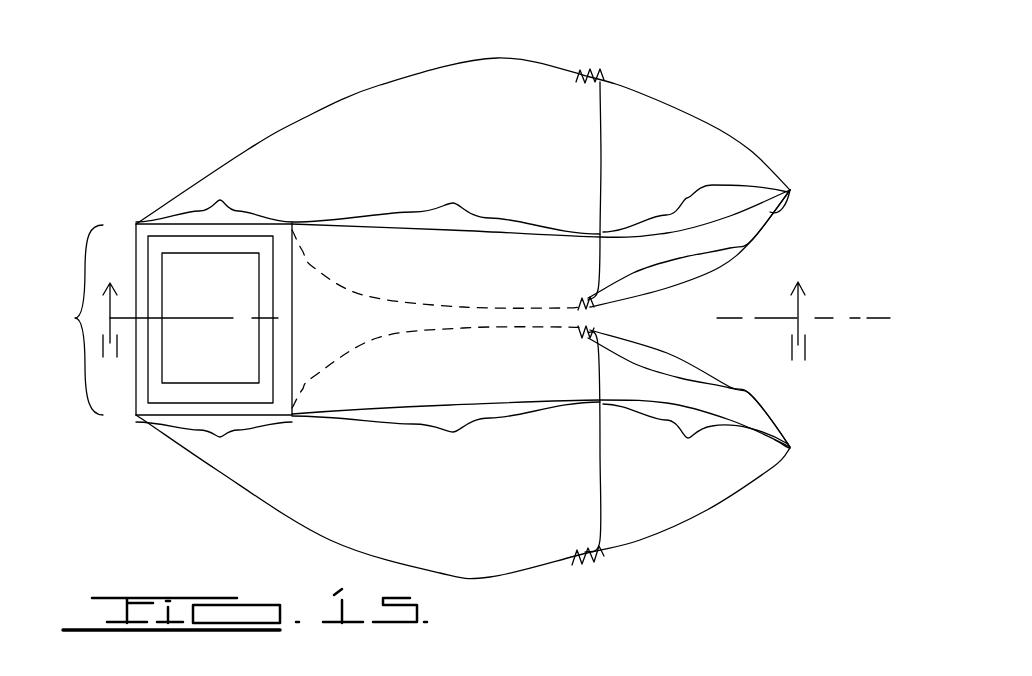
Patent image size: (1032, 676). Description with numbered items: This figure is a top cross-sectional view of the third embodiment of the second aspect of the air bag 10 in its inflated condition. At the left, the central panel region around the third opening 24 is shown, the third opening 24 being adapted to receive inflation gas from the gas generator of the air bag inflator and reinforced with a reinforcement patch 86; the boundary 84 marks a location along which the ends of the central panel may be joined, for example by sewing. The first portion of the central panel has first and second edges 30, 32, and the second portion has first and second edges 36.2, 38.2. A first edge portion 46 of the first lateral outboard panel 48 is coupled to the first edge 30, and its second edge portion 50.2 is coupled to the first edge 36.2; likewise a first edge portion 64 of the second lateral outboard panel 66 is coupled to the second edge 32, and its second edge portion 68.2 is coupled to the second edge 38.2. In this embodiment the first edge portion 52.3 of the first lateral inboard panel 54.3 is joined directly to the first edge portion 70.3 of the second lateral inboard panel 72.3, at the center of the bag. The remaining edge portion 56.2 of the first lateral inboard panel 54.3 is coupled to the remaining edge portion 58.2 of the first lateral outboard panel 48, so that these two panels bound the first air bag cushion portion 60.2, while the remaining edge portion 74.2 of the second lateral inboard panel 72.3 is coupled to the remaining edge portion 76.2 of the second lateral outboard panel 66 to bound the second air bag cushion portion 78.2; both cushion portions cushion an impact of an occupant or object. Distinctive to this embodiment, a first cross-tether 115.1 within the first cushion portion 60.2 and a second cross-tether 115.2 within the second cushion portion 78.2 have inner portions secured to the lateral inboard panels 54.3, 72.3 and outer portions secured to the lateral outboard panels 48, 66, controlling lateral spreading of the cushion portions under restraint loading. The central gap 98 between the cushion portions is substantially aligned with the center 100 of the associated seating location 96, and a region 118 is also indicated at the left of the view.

The air bag 10 is at (457, 302).
The third opening 24 is at (220, 305).
The first edge 30 is at (152, 413).
The second edge 32 is at (152, 226).
The first edge 36.2 is at (330, 410).
The second edge 38.2 is at (330, 228).
The first edge portion 46 is at (214, 441).
The first lateral outboard panel 48 is at (560, 572).
The second edge portion 50.2 is at (446, 431).
The first edge portion 52.3 is at (610, 314).
The first lateral inboard panel 54.3 is at (743, 388).
The remaining edge portion 56.2 is at (793, 447).
The remaining edge portion 58.2 is at (695, 436).
The first air bag cushion portion 60.2 is at (721, 541).
The first edge portion 64 is at (214, 196).
The second lateral outboard panel 66 is at (710, 124).
The second edge portion 68.2 is at (446, 206).
The first edge portion 70.3 is at (628, 325).
The second lateral inboard panel 72.3 is at (718, 268).
The remaining edge portion 74.2 is at (770, 212).
The remaining edge portion 76.2 is at (695, 201).
The second air bag cushion portion 78.2 is at (773, 149).
The boundary 84 is at (292, 293).
The reinforcement patch 86 is at (155, 377).
The seating location 96 is at (855, 274).
The central gap 98 is at (733, 330).
The center of seating location 100 is at (827, 320).
The first cross-tether 115.1 is at (602, 480).
The second cross-tether 115.2 is at (602, 165).
The frame region 118 is at (65, 320).